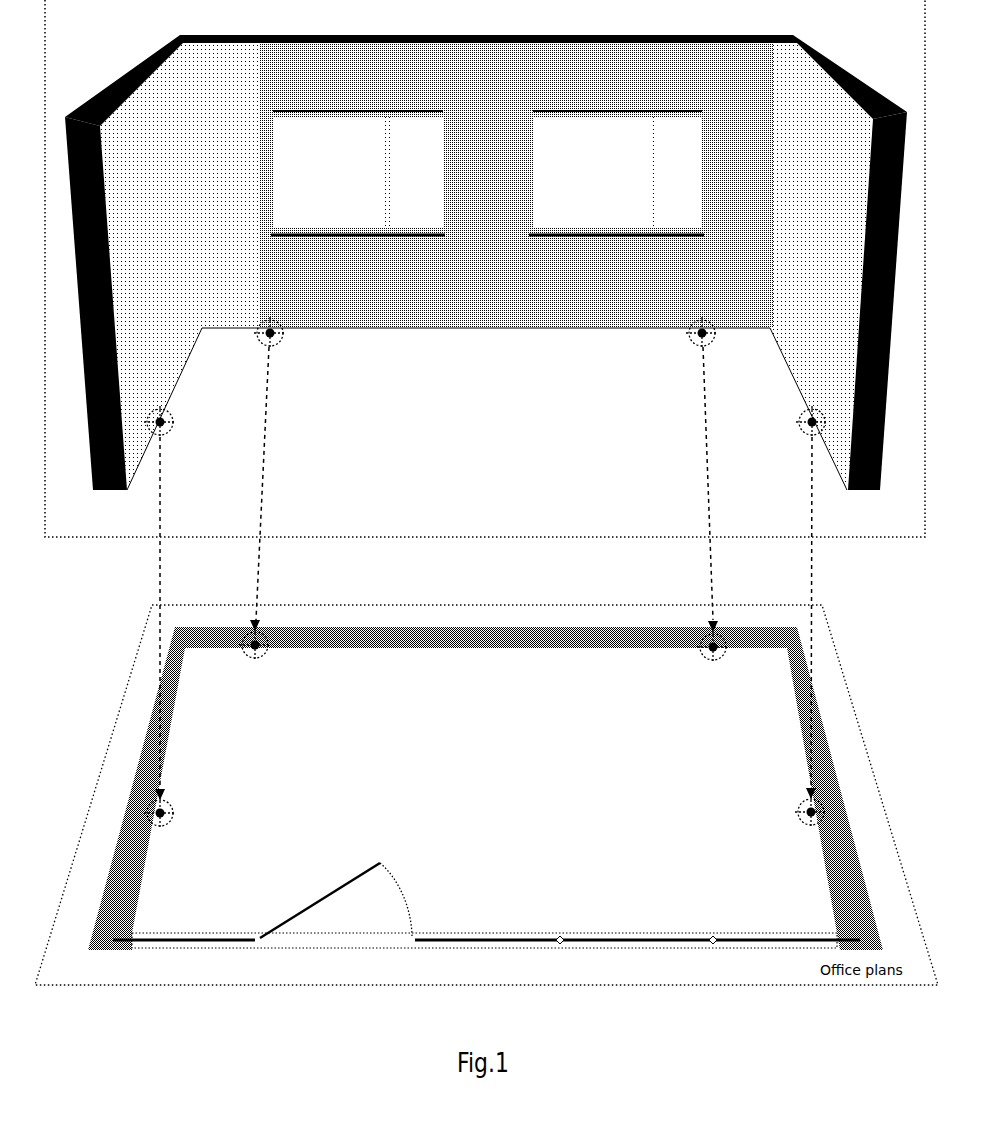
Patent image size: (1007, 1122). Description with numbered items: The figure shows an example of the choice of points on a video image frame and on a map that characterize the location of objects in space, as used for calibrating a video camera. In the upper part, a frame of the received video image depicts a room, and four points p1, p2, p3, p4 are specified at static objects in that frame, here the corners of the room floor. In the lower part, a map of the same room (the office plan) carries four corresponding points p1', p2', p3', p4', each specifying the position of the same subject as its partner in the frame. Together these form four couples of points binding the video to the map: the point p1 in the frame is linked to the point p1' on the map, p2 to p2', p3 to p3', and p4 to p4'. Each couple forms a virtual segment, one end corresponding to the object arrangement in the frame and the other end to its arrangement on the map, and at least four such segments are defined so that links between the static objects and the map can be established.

The first point on video image frame p1 is at (169, 407).
The second point on video image frame p2 is at (281, 342).
The third point on video image frame p3 is at (713, 342).
The fourth point on video image frame p4 is at (796, 431).
The first point on map p1' is at (177, 633).
The second point on map p2' is at (270, 512).
The third point on map p3' is at (728, 514).
The fourth point on map p4' is at (792, 632).